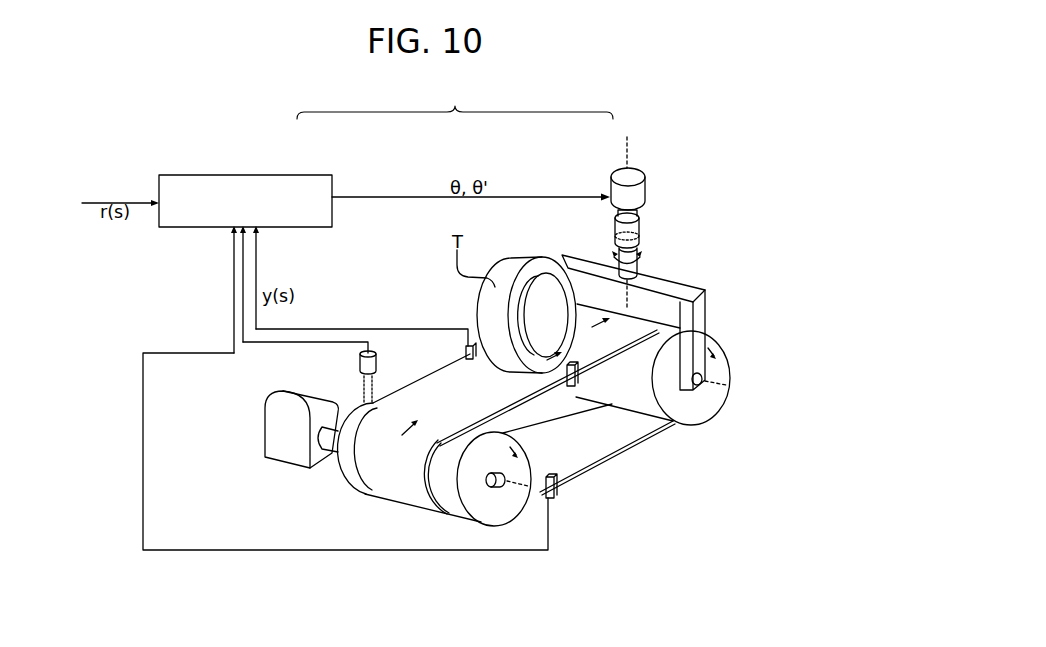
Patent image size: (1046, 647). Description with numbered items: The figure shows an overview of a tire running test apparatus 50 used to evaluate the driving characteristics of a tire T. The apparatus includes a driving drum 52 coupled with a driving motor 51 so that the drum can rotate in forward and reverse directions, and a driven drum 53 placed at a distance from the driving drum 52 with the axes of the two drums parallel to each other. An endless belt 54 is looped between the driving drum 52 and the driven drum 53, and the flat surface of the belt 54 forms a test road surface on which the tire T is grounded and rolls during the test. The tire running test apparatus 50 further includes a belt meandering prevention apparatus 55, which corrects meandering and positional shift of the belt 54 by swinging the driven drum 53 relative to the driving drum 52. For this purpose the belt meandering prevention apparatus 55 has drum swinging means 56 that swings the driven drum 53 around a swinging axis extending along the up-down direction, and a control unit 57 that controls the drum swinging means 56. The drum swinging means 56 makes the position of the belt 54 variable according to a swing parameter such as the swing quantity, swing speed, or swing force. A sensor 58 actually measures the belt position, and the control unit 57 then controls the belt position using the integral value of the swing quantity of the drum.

The tire running test apparatus 50 is at (703, 172).
The driving motor 51 is at (273, 438).
The driving drum 52 is at (488, 511).
The driven drum 53 is at (698, 408).
The endless belt 54 is at (500, 393).
The belt meandering prevention apparatus 55 is at (455, 100).
The drum swinging means 56 is at (618, 167).
The control unit 57 is at (316, 175).
The sensor 58 is at (466, 356).